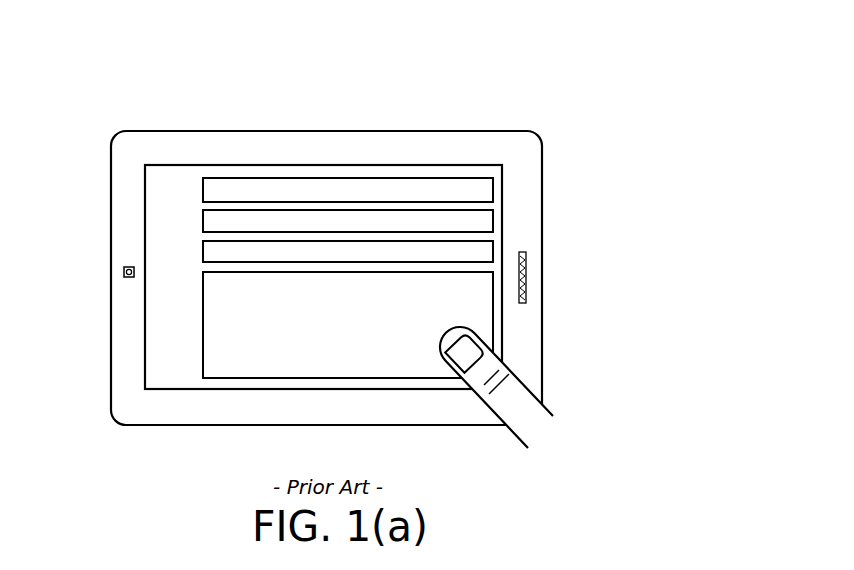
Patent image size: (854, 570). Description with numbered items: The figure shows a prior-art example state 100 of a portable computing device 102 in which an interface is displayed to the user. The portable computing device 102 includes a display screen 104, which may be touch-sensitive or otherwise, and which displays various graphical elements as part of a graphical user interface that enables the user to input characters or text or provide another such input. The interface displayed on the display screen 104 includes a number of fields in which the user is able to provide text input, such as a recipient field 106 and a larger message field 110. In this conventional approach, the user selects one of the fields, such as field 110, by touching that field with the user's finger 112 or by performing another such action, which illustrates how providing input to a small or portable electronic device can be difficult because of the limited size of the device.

The state 100 is at (390, 232).
The portable computing device 102 is at (428, 130).
The display screen 104 is at (168, 163).
The field 106 is at (300, 177).
The field 110 is at (202, 319).
The user's finger 112 is at (543, 428).